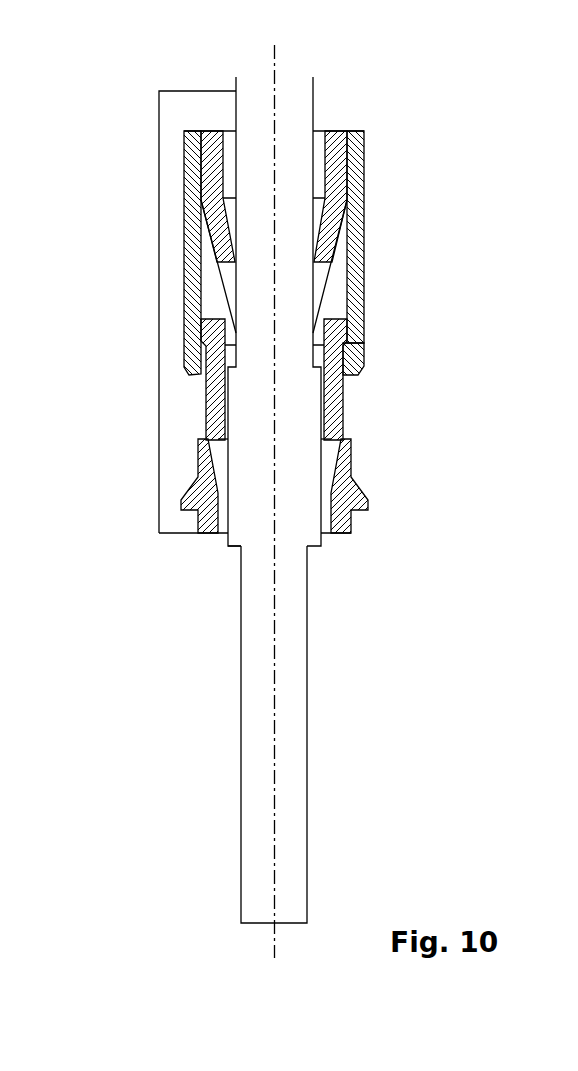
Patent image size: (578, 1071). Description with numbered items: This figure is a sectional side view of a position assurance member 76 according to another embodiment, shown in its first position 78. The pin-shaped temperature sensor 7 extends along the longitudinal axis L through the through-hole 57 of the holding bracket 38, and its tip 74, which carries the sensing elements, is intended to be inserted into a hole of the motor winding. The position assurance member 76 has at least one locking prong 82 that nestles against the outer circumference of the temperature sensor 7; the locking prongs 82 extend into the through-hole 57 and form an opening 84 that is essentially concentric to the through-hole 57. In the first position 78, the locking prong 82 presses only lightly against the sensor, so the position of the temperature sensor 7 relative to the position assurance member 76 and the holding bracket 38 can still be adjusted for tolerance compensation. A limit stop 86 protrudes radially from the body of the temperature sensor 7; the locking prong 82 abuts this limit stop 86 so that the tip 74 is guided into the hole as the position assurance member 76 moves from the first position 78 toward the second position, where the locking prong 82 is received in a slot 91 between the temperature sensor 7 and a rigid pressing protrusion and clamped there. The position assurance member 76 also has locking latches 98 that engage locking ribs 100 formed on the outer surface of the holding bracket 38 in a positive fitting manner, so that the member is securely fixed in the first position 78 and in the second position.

The first position 78 is at (135, 75).
The longitudinal axis L is at (276, 73).
The temperature sensor 7 is at (300, 112).
The tip 74 is at (258, 769).
The limit stop 86 is at (231, 558).
The locking latches 98 is at (192, 240).
The opening 84 is at (228, 186).
The position assurance member 76 is at (338, 163).
The locking prong 82 is at (318, 283).
The holding bracket 38 is at (213, 398).
The through-hole 57 is at (335, 400).
The slot 91 is at (215, 457).
The locking ribs 100 is at (350, 343).